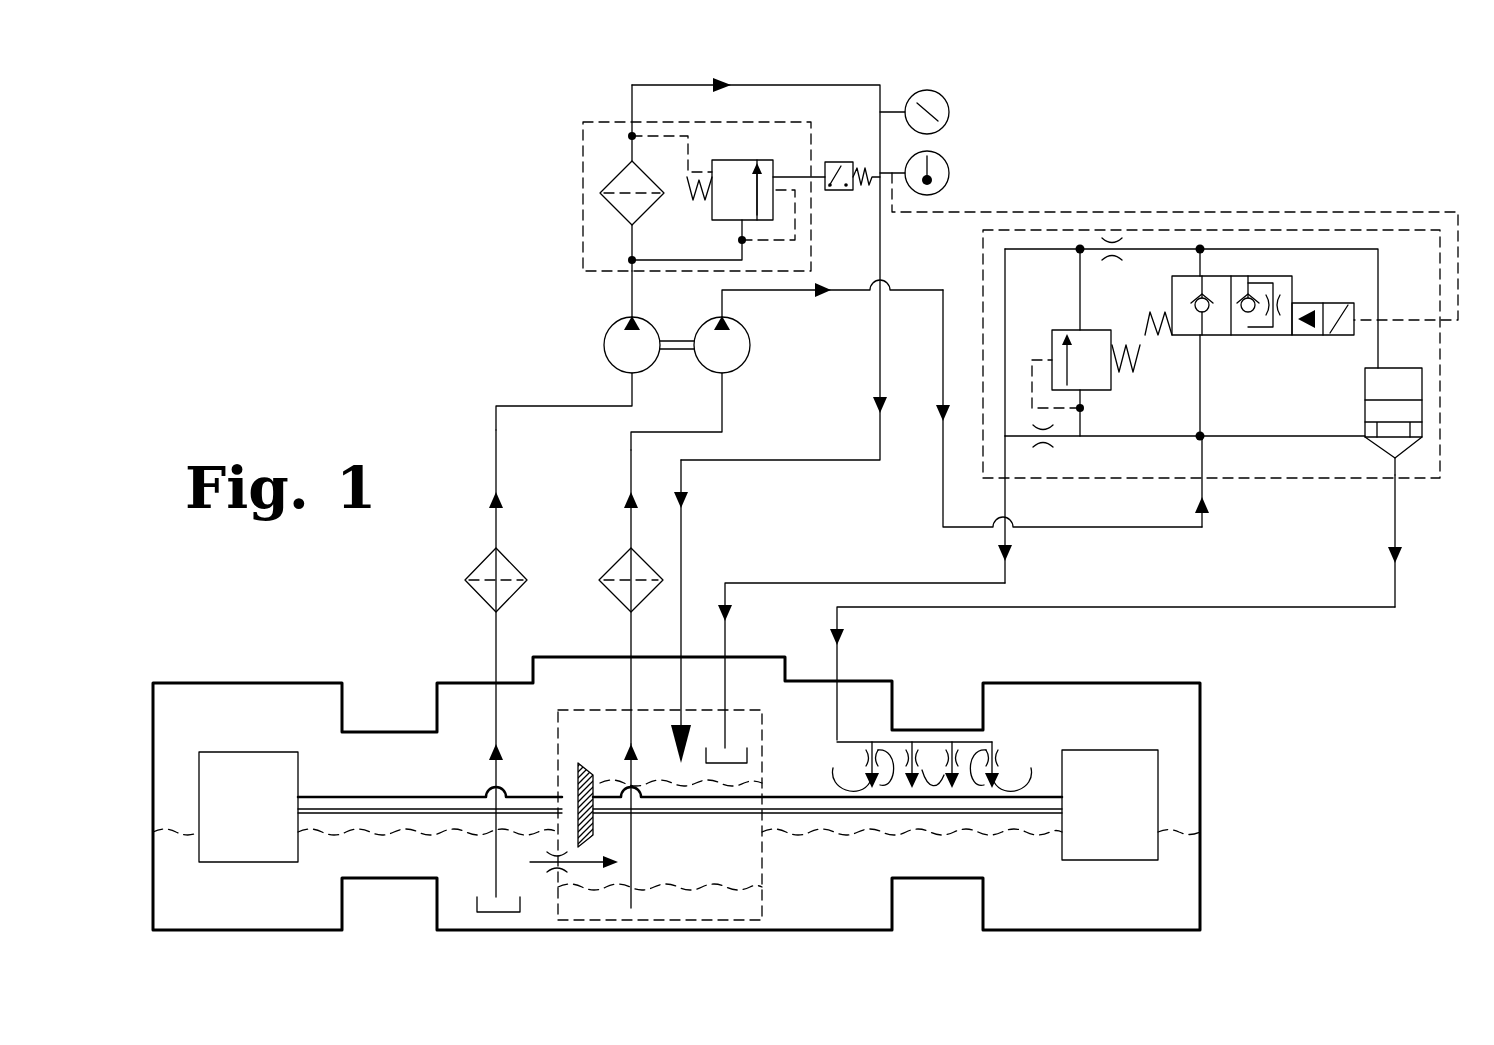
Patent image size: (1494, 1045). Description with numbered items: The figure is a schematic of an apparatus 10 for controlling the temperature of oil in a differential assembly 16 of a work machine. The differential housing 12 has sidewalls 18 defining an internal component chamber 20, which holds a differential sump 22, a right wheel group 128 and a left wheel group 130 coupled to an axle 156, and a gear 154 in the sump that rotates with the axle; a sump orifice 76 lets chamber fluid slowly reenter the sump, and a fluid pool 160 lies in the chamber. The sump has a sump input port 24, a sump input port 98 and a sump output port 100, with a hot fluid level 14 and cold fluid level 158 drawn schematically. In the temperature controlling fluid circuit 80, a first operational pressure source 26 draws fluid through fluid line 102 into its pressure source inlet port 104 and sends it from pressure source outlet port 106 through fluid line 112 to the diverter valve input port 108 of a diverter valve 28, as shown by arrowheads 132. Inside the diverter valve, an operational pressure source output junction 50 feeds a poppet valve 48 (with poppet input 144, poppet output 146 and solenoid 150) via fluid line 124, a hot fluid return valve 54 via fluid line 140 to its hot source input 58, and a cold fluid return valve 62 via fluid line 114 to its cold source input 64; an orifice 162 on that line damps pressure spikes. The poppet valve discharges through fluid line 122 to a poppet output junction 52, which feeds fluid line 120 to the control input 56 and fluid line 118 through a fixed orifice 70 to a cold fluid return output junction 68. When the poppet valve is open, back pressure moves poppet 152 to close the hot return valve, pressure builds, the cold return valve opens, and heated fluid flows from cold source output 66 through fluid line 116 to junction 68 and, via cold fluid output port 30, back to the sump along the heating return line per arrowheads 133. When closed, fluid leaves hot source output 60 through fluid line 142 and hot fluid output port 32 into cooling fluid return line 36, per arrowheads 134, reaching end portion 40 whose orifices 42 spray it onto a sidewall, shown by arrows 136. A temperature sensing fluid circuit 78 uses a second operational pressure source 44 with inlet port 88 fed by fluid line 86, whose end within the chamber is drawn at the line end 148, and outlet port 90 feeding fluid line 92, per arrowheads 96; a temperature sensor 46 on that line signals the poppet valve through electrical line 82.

The apparatus 10 is at (308, 212).
The differential housing 12 is at (910, 682).
The hot fluid level 14 is at (660, 834).
The differential assembly 16 is at (432, 660).
The sidewall 18 is at (395, 732).
The internal component chamber 20 is at (240, 683).
The differential sump 22 is at (762, 850).
The sump input port 24 is at (727, 705).
The first operational pressure source 26 is at (750, 345).
The diverter valve 28 is at (1285, 230).
The cold fluid output port 30 is at (1005, 480).
The hot fluid output port 32 is at (1398, 480).
The cooling fluid return line 36 is at (1312, 607).
The end portion 40 is at (992, 742).
The orifices 42 is at (933, 765).
The second operational pressure source 44 is at (604, 345).
The temperature sensor 46 is at (950, 170).
The poppet valve 48 is at (1300, 303).
The operational pressure source output junction 50 is at (1203, 432).
The poppet output junction 52 is at (1200, 249).
The hot fluid return valve 54 is at (1422, 390).
The control input 56 is at (1385, 368).
The hot source input 58 is at (1365, 430).
The hot source output 60 is at (1405, 455).
The cold fluid return valve 62 is at (1060, 330).
The cold source input 64 is at (1085, 400).
The cold source output 66 is at (1083, 335).
The cold fluid return output junction 68 is at (1080, 249).
The fixed orifice 70 is at (1112, 249).
The sump orifice 76 is at (572, 890).
The temperature sensing fluid circuit 78 is at (493, 382).
The temperature controlling fluid circuit 80 is at (1420, 565).
The electrical line 82 is at (1458, 212).
The fluid line 86 is at (496, 438).
The inlet port 88 is at (630, 378).
The outlet port 90 is at (625, 320).
The fluid line 92 is at (775, 88).
The arrowheads 96 is at (716, 96).
The sump input port 98 is at (683, 705).
The sump output port 100 is at (631, 705).
The fluid line 102 is at (640, 428).
The pressure source inlet port 104 is at (724, 378).
The pressure source outlet port 106 is at (728, 320).
The diverter valve input port 108 is at (1205, 487).
The fluid line 112 is at (943, 290).
The fluid line 114 is at (1122, 437).
The fluid line 116 is at (1082, 270).
The fluid line 118 is at (1185, 276).
The fluid line 120 is at (1345, 249).
The fluid line 122 is at (1205, 276).
The fluid line 124 is at (1203, 365).
The right wheel group 128 is at (1095, 860).
The left wheel group 130 is at (262, 862).
The arrowheads 132 is at (935, 435).
The arrowheads 133 is at (732, 613).
The arrowheads 134 is at (845, 637).
The arrows 136 is at (875, 748).
The fluid line 140 is at (1250, 437).
The fluid line 142 is at (1392, 465).
The poppet input 144 is at (1190, 340).
The poppet output 146 is at (1210, 279).
The sump outlet 148 is at (490, 907).
The solenoid 150 is at (1340, 335).
The poppet 152 is at (1405, 412).
The gear 154 is at (575, 773).
The axle 156 is at (366, 797).
The cold fluid level 158 is at (757, 777).
The fluid pool 160 is at (400, 835).
The orifice 162 is at (1047, 448).